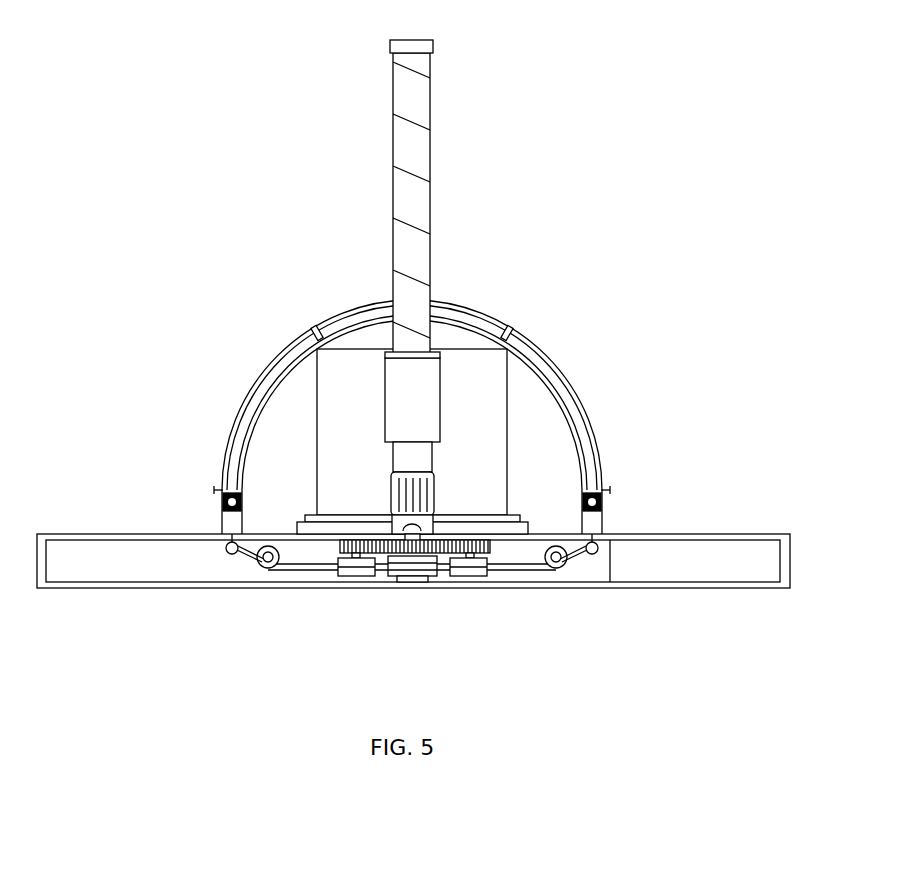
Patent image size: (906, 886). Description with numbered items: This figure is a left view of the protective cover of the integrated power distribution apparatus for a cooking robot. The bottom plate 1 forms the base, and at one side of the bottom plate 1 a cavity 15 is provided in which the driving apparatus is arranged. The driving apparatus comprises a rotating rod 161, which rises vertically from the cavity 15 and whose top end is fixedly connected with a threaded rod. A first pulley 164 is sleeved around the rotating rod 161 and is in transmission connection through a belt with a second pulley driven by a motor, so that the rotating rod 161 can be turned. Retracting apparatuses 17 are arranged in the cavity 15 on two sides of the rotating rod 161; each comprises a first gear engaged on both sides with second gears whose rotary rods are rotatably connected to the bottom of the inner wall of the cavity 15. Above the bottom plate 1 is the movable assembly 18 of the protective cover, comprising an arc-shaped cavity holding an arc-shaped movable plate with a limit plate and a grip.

The bottom plate 1 is at (53, 585).
The cavity 15 is at (142, 561).
The retracting apparatus 17 is at (352, 578).
The movable assembly 18 is at (572, 402).
The rotating rod 161 is at (393, 186).
The first pulley 164 is at (413, 560).